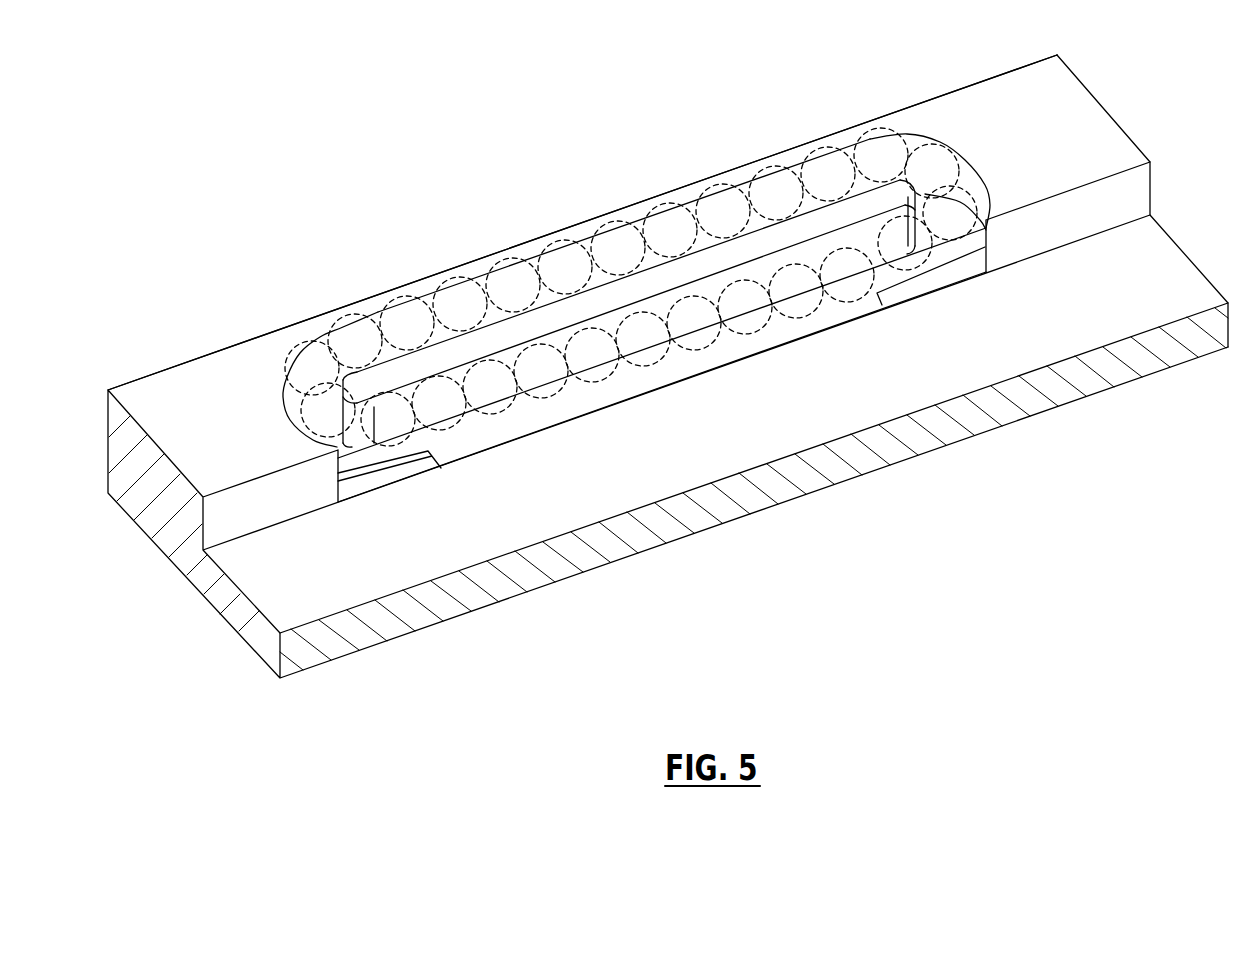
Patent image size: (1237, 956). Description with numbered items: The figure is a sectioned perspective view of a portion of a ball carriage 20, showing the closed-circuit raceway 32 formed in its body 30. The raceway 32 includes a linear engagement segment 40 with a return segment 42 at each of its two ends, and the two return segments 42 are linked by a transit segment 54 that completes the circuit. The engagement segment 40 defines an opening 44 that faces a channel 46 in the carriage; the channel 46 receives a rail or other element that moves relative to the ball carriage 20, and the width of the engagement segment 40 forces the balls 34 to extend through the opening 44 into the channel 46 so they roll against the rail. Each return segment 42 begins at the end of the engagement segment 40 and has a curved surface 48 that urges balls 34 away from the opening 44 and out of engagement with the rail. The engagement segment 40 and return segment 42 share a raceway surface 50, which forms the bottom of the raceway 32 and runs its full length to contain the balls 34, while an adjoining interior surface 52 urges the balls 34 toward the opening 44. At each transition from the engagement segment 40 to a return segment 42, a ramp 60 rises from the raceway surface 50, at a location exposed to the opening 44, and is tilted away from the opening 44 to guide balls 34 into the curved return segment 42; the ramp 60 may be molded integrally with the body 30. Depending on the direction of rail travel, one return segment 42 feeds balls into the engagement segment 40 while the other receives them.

The ball carriage 20 is at (487, 100).
The body 30 is at (1125, 131).
The raceway 32 is at (738, 153).
The balls 34 is at (435, 402).
The engagement segment 40 is at (650, 297).
The return segment 42 is at (293, 370).
The opening 44 is at (537, 432).
The channel 46 is at (257, 560).
The curved surface 48 is at (967, 165).
The raceway surface 50 is at (853, 320).
The interior surface 52 is at (750, 280).
The transit segment 54 is at (522, 262).
The ramp 60 is at (963, 292).